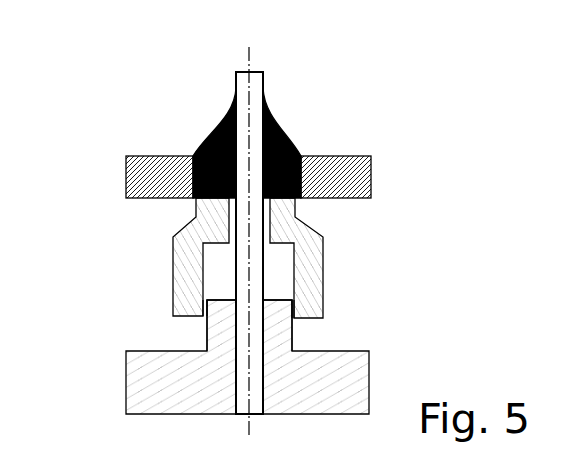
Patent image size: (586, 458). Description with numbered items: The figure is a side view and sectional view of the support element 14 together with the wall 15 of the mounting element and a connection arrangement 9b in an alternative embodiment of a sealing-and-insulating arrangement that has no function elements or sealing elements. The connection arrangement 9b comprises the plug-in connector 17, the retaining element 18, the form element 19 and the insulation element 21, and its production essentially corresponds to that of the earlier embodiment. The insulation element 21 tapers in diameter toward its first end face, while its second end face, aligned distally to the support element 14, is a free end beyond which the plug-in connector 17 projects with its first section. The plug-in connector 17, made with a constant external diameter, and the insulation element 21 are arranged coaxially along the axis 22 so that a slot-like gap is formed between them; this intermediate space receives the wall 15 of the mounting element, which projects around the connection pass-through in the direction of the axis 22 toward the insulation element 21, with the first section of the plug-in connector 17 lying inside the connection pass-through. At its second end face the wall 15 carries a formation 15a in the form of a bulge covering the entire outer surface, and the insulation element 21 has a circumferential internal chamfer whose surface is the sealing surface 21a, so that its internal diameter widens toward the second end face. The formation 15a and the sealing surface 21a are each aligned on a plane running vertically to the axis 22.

The support element 14 is at (150, 387).
The wall 15 is at (216, 336).
The formation 15a is at (205, 305).
The plug-in connector 17 is at (243, 92).
The retaining element 18 is at (148, 169).
The form element 19 is at (212, 137).
The insulation element 21 is at (317, 247).
The sealing surface 21a is at (203, 318).
The axis 22 is at (253, 53).
The connection arrangement 9b is at (322, 100).